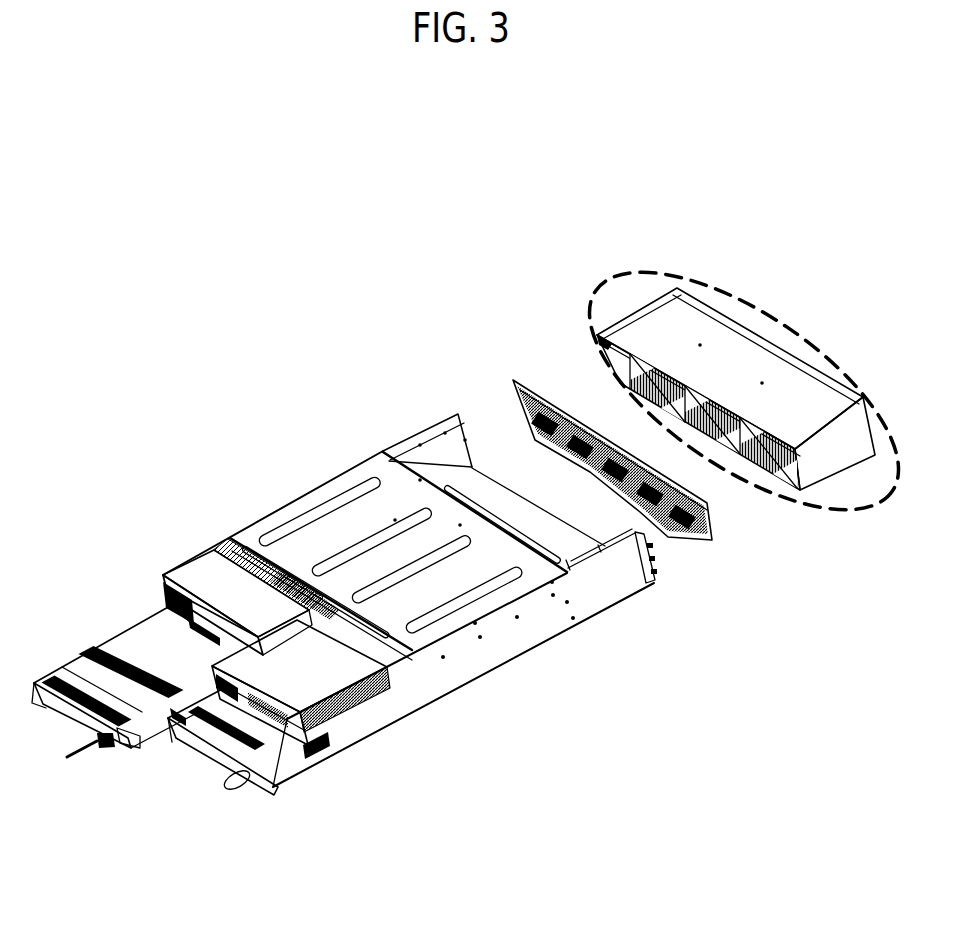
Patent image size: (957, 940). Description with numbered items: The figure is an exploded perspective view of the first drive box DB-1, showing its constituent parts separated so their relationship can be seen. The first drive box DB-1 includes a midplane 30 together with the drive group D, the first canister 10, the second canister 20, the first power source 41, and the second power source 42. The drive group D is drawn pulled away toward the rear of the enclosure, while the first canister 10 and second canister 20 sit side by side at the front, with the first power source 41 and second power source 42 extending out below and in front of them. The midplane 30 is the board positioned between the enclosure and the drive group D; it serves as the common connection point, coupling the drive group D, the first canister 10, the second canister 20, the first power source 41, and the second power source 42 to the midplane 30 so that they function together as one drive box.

The first drive box DB-1 is at (250, 296).
The first canister 10 is at (175, 568).
The second canister 20 is at (330, 663).
The midplane 30 is at (513, 380).
The first power source 41 is at (123, 637).
The second power source 42 is at (240, 720).
The drive group D is at (645, 278).